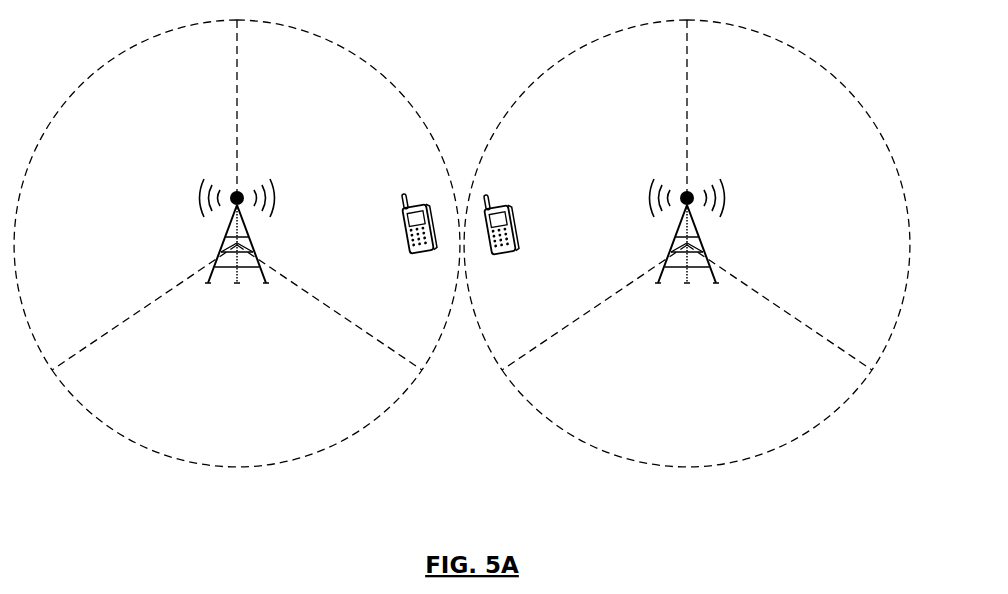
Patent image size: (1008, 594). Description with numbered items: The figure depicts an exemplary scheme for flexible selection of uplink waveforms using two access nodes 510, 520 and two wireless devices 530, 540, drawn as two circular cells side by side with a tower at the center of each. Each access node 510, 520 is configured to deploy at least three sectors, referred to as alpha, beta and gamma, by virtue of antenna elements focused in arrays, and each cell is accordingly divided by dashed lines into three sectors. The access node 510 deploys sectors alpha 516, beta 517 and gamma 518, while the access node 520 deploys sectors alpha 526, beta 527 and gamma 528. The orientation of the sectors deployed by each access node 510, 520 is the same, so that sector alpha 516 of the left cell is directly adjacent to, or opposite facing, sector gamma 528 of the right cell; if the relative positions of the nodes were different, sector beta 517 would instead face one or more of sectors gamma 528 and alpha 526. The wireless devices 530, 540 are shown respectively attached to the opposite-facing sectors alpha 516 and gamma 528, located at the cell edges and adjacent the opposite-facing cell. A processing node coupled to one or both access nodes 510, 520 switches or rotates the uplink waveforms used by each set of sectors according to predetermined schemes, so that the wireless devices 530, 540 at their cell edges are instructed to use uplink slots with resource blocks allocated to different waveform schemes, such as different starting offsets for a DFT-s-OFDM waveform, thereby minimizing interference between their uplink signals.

The access node 510 is at (226, 254).
The sector alpha 516 is at (348, 195).
The sector beta 517 is at (237, 356).
The sector gamma 518 is at (125, 195).
The access node 520 is at (703, 258).
The sector alpha 526 is at (798, 195).
The sector beta 527 is at (687, 356).
The sector gamma 528 is at (575, 195).
The wireless device 530 is at (410, 248).
The wireless device 540 is at (507, 252).